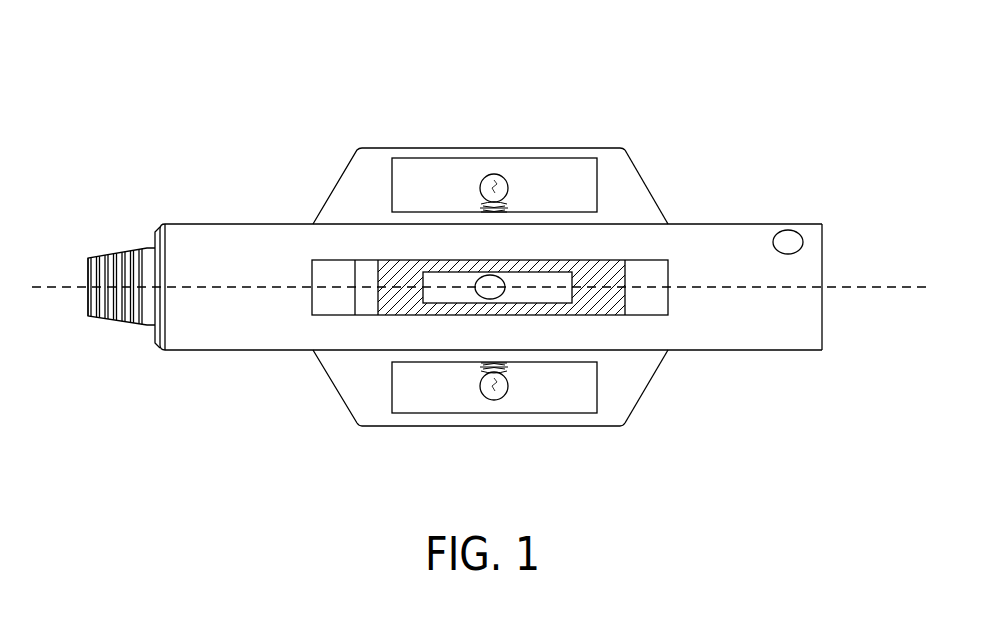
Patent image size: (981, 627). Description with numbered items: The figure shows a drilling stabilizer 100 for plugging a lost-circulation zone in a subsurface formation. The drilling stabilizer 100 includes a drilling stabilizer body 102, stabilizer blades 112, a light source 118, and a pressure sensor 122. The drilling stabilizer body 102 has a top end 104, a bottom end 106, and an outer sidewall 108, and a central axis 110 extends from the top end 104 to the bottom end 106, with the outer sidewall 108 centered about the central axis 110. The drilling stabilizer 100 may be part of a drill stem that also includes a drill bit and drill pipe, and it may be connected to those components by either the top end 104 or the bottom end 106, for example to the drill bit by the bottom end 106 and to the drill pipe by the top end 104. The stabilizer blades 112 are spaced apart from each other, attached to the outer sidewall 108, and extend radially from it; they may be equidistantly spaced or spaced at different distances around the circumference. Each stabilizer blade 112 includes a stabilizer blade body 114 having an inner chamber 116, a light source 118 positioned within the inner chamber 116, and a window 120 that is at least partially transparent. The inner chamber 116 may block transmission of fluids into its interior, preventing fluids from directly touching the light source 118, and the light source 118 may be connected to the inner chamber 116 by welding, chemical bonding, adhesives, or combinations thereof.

The drilling stabilizer 100 is at (172, 118).
The drilling stabilizer body 102 is at (183, 225).
The top end 104 is at (825, 248).
The bottom end 106 is at (155, 232).
The outer sidewall 108 is at (260, 255).
The central axis 110 is at (55, 287).
The stabilizer blades 112 is at (625, 148).
The stabilizer blade body 114 is at (623, 197).
The inner chamber 116 is at (565, 162).
The light source 118 is at (495, 174).
The window 120 is at (428, 172).
The pressure sensor 122 is at (788, 230).